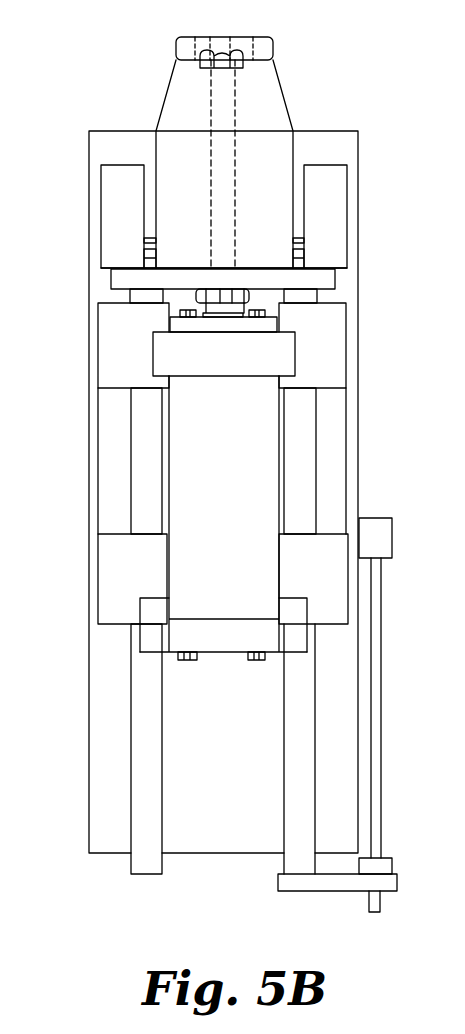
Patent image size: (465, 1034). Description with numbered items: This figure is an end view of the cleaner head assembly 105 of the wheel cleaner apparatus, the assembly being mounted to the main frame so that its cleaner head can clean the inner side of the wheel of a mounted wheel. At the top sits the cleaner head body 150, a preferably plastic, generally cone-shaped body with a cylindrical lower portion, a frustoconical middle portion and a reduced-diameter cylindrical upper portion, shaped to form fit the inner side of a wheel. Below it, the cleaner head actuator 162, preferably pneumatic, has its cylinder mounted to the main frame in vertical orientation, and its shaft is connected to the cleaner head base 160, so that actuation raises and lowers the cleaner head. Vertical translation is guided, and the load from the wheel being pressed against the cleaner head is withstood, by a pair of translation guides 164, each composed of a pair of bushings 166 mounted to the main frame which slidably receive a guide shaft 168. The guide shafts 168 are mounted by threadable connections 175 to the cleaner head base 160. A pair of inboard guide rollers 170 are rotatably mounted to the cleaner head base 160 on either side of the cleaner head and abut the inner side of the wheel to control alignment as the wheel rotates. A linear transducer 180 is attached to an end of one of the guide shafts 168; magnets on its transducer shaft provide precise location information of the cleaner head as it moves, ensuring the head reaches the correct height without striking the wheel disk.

The cleaner head assembly 105 is at (40, 580).
The cleaner head body 150 is at (287, 105).
The cleaner head base 160 is at (0, 275).
The cleaner head actuator 162 is at (166, 490).
The translation guides 164 is at (259, 683).
The bushings 166 is at (98, 360).
The guide shafts 168 is at (280, 862).
The inboard guide rollers 170 is at (101, 213).
The threadable connections 175 is at (148, 264).
The linear transducer 180 is at (358, 824).